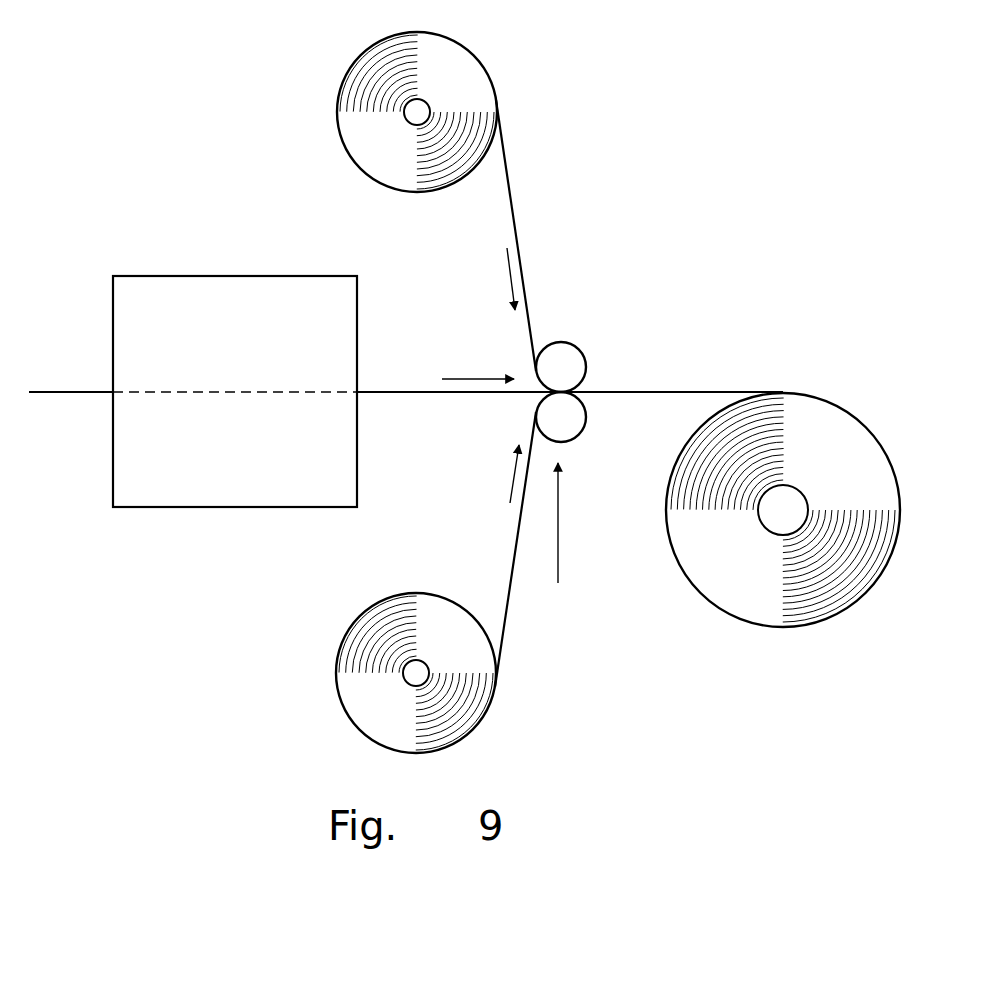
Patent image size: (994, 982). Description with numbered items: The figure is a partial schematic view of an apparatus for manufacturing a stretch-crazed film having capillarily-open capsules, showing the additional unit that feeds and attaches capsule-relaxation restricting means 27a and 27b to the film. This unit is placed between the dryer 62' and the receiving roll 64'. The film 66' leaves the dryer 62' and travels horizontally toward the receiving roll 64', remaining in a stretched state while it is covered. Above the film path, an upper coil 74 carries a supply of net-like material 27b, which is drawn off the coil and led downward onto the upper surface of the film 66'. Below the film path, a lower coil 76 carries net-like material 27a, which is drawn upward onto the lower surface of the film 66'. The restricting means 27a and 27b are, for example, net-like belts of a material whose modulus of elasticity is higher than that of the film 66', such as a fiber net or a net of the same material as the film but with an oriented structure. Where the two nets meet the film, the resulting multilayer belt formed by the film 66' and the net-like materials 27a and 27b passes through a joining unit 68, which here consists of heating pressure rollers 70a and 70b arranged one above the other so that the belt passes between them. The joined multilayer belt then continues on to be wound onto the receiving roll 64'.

The upper coil 74 is at (373, 127).
The lower coil 76 is at (378, 705).
The receiving roll 64' is at (775, 532).
The dryer 62' is at (235, 432).
The film 66' is at (406, 342).
The capsule-relaxation restricting means 27b is at (525, 290).
The capsule-relaxation restricting means 27a is at (507, 577).
The heating pressure roller 70a is at (568, 367).
The heating pressure roller 70b is at (568, 422).
The joining unit 68 is at (561, 550).